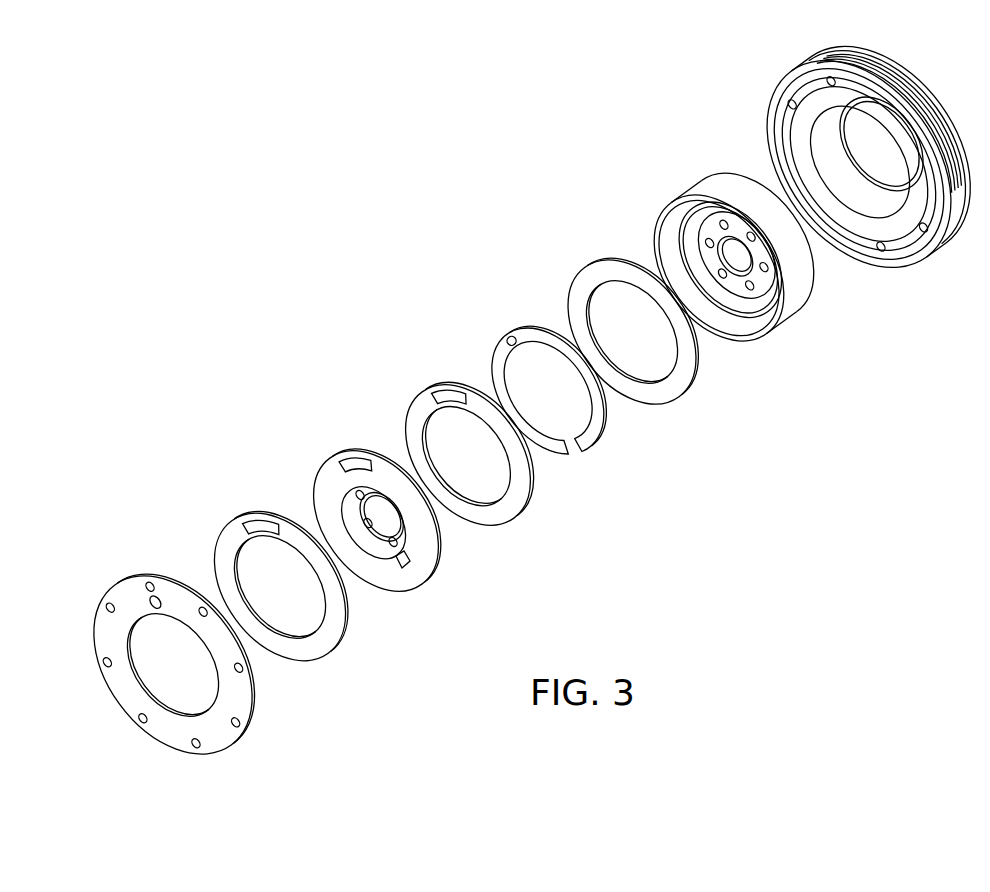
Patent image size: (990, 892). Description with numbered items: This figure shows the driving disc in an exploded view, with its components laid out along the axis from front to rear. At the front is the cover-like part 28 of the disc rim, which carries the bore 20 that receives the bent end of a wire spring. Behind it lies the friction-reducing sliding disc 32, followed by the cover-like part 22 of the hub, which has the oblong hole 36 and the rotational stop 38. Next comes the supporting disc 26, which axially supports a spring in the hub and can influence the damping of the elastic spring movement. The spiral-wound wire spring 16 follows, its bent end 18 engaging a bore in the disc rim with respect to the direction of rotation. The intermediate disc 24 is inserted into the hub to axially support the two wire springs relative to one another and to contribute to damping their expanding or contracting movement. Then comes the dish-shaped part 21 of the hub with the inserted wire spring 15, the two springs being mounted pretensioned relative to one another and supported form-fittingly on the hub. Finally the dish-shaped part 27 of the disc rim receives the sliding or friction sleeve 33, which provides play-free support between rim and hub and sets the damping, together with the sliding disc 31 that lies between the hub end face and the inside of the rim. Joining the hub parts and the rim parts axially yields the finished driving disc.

The wire spring 15 is at (690, 210).
The wire spring 16 is at (543, 328).
The bent end 18 is at (516, 334).
The bore 20 is at (155, 600).
The dish-shaped part 21 is at (708, 180).
The cover-like part 22 is at (325, 472).
The intermediate disc 24 is at (596, 272).
The supporting disc 26 is at (413, 417).
The dish-shaped part 27 is at (833, 72).
The cover-like part 28 is at (118, 598).
The sliding disc 31 is at (897, 203).
The sliding disc 32 is at (237, 520).
The sliding or friction sleeve 33 is at (802, 117).
The oblong hole 36 is at (357, 457).
The rotational stop 38 is at (403, 568).